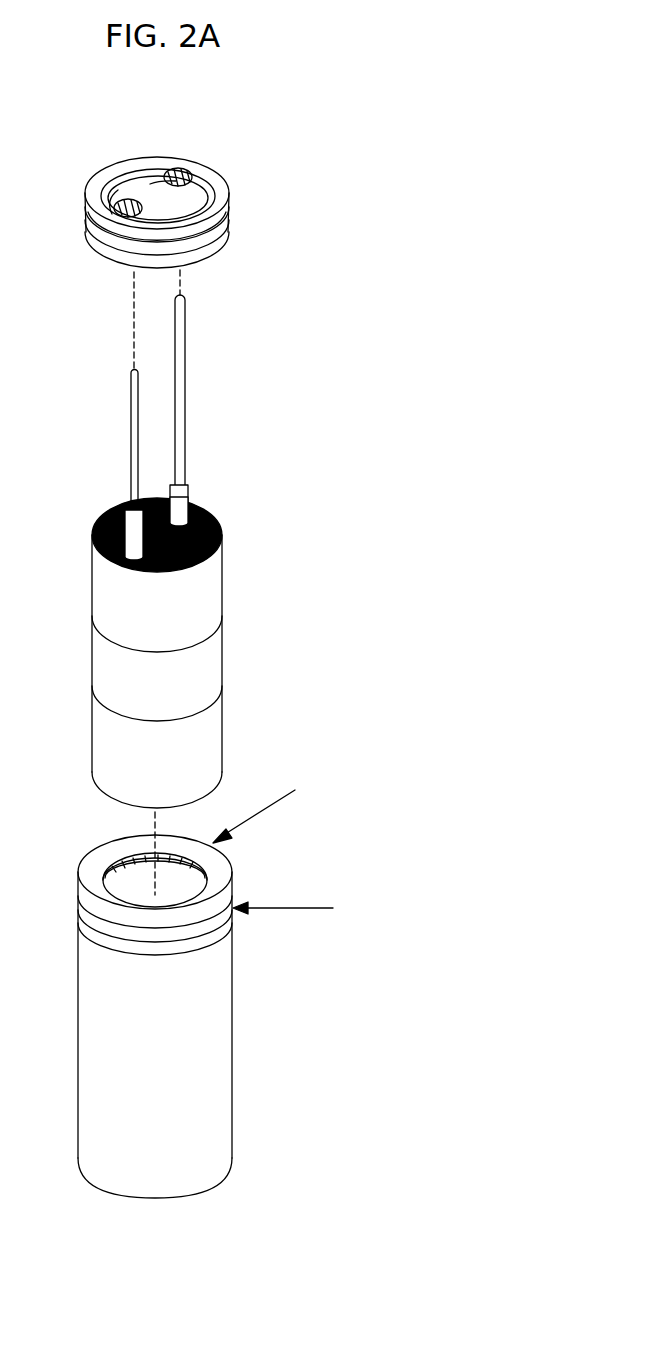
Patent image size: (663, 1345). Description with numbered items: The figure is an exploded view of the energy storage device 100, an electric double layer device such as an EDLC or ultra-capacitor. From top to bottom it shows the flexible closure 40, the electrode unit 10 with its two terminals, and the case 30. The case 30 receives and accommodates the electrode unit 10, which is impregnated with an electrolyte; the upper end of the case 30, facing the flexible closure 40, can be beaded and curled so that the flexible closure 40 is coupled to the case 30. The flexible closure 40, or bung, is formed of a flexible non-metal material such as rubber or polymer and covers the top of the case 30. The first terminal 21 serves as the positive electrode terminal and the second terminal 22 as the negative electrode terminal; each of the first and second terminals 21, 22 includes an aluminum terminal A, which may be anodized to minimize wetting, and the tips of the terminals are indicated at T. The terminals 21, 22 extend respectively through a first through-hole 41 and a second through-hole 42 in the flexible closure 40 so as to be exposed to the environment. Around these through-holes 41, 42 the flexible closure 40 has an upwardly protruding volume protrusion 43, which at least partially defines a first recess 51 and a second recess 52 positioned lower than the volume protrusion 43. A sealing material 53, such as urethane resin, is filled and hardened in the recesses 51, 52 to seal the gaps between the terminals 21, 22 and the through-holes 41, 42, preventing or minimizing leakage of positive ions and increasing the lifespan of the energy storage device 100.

The energy storage device 100 is at (433, 118).
The electrode unit 10 is at (232, 622).
The first terminal 21 is at (200, 423).
The second terminal 22 is at (120, 454).
The case 30 is at (217, 1062).
The flexible closure 40 is at (205, 194).
The first through-hole 41 is at (186, 170).
The second through-hole 42 is at (112, 201).
The volume protrusion 43 is at (230, 230).
The first recess 51 is at (191, 183).
The second recess 52 is at (111, 222).
The sealing material 53 is at (153, 175).
The lead wire tip portion T is at (170, 374).
The aluminum terminal A is at (190, 508).